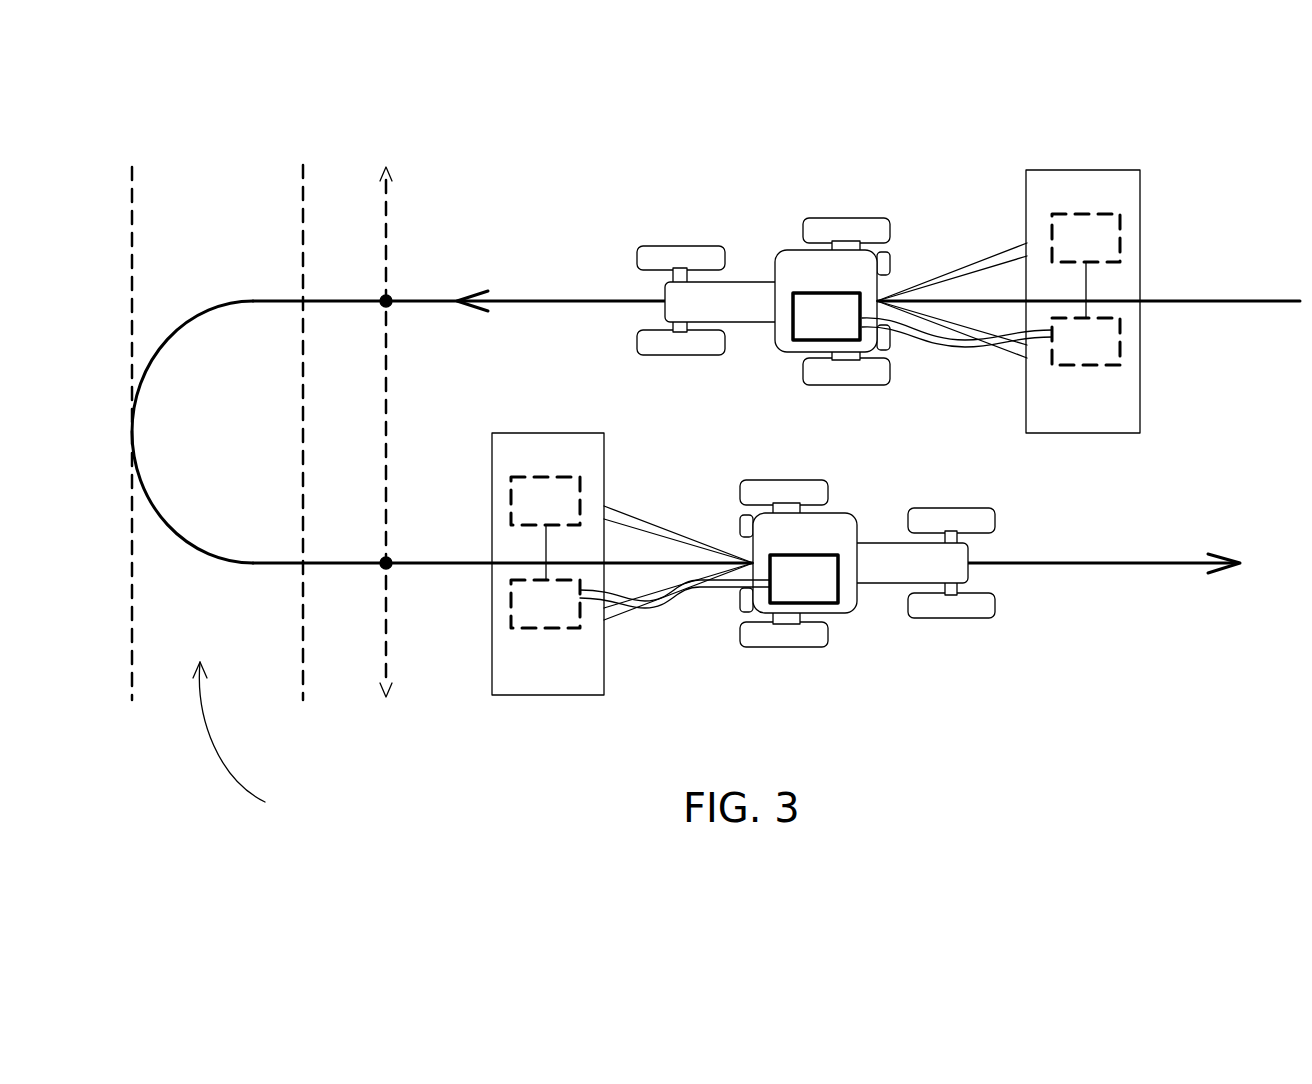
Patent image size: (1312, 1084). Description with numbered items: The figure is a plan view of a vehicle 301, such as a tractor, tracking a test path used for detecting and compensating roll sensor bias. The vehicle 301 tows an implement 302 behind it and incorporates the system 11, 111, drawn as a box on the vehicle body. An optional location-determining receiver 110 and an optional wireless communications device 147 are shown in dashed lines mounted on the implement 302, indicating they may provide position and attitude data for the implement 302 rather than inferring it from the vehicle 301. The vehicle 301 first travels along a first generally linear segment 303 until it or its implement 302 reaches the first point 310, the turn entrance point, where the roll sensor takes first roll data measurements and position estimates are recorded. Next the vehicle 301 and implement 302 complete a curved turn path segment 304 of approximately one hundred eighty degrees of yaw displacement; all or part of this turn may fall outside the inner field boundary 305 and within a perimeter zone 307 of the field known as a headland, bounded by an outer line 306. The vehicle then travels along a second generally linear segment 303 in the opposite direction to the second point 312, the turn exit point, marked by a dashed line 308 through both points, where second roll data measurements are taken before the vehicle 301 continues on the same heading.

The system 11 is at (815, 375).
The system 111 is at (828, 292).
The location-determining receiver 110 is at (1108, 355).
The wireless communications device 147 is at (1108, 252).
The vehicle 301 is at (790, 265).
The implement 302 is at (1078, 193).
The generally linear segment 303 is at (553, 298).
The turn path segment 304 is at (212, 308).
The inner field boundary 305 is at (300, 205).
The outer boundary line 306 is at (128, 205).
The perimeter zone 307 is at (258, 742).
The turning start/end line 308 is at (388, 201).
The first point 310 is at (390, 297).
The second point 312 is at (390, 566).